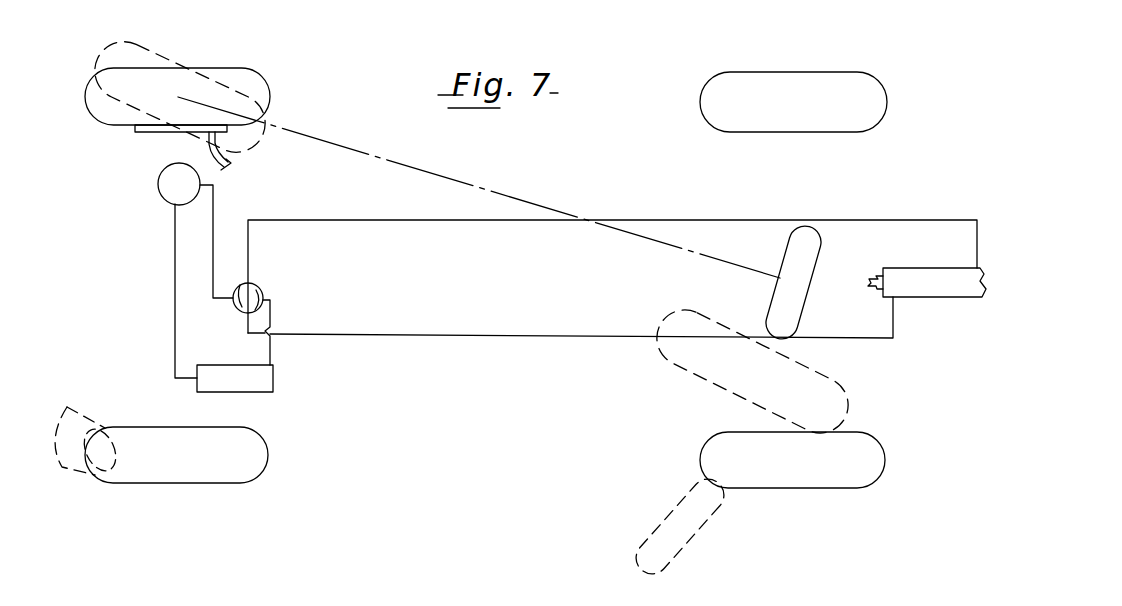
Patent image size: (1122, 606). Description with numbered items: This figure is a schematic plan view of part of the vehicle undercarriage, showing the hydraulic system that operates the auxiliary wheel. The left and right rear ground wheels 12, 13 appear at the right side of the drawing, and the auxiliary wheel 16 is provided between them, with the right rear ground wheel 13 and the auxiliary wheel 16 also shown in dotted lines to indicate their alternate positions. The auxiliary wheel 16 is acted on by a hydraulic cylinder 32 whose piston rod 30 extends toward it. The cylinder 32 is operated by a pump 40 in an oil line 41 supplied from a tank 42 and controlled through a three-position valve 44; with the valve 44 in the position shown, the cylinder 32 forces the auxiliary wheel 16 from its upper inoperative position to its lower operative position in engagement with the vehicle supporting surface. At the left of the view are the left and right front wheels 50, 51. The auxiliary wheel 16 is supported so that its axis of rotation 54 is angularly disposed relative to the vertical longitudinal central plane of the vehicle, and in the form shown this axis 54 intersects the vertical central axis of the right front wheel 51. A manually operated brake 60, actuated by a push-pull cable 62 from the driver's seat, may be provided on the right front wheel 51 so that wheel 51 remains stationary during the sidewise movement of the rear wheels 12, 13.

The left rear ground wheel 12 is at (888, 459).
The right rear ground wheel 13 is at (880, 92).
The auxiliary wheel 16 is at (815, 240).
The piston rod 30 is at (874, 276).
The hydraulic cylinder 32 is at (934, 298).
The pump 40 is at (172, 206).
The oil line 41 is at (521, 337).
The tank 42 is at (226, 393).
The three-position valve 44 is at (266, 296).
The left front wheel 50 is at (149, 484).
The right front wheel 51 is at (240, 68).
The axis of rotation 54 is at (498, 193).
The manually operated brake 60 is at (137, 133).
The push-pull cable 62 is at (228, 161).